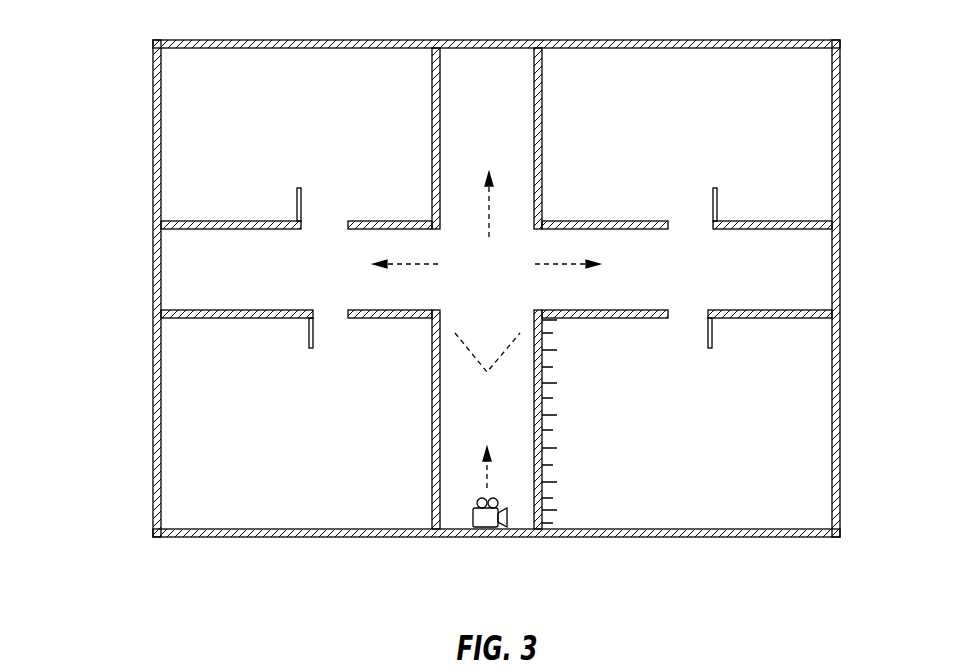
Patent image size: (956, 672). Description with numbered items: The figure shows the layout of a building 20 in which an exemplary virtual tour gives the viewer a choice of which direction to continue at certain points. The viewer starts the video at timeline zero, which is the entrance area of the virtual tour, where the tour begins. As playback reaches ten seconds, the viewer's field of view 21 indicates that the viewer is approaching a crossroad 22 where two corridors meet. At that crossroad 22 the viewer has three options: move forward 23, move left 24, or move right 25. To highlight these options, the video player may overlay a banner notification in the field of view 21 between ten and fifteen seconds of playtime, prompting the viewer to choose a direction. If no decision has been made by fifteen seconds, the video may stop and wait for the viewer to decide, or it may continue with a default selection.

The building 20 is at (118, 67).
The field of view 21 is at (465, 347).
The crossroad 22 is at (502, 288).
The move forward 23 is at (489, 200).
The move left 24 is at (422, 267).
The move right 25 is at (567, 265).